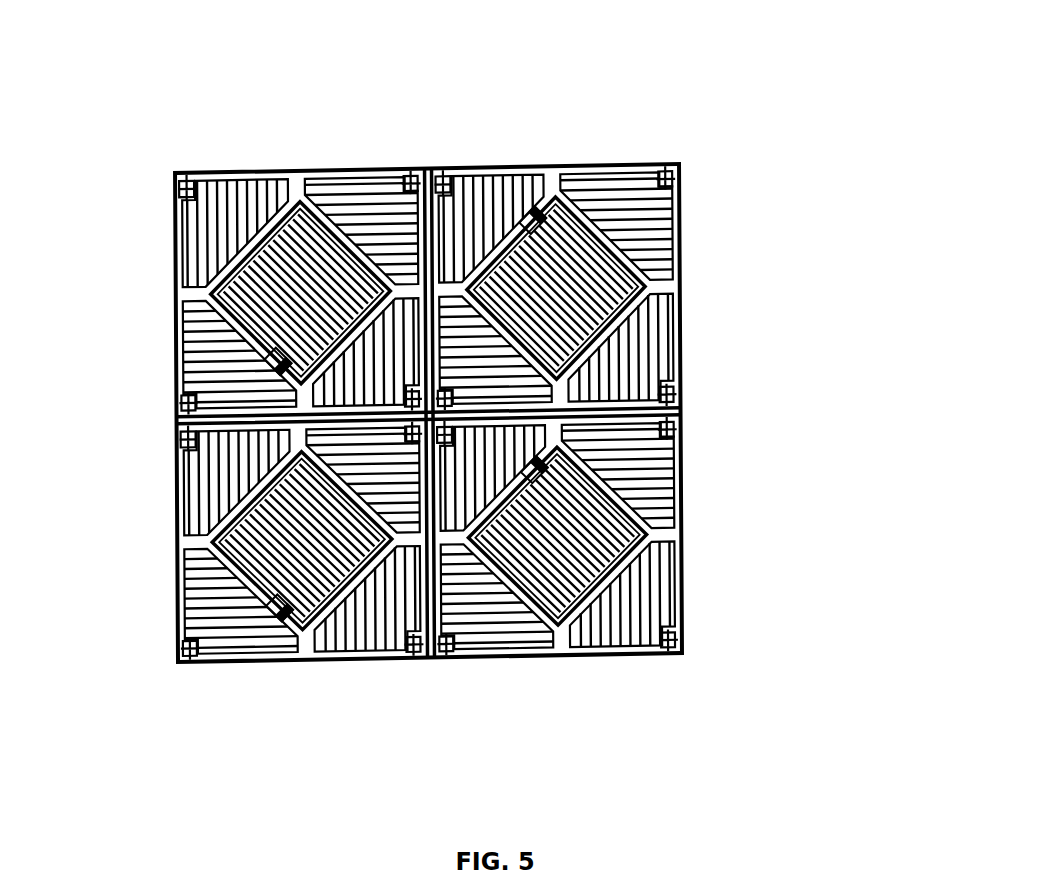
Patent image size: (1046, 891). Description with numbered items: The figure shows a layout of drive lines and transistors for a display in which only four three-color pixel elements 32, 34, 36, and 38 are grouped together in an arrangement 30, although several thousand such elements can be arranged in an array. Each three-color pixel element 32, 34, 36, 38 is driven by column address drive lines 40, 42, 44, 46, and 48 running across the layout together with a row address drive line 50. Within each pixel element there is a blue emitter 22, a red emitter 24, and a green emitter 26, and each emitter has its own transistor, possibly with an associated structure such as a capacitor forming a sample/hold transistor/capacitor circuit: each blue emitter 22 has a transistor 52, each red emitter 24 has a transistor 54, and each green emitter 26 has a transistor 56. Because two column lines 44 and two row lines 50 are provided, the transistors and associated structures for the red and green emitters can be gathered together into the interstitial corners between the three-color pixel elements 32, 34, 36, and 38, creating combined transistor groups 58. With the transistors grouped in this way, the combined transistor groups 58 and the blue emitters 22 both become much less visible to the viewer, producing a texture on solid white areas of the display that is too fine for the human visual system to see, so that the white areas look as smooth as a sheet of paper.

The blue emitter 22 is at (322, 218).
The red emitter 24 is at (233, 200).
The green emitter 26 is at (387, 192).
The arrangement 30 is at (777, 101).
The three-color pixel element 32 is at (247, 257).
The three-color pixel element 34 is at (244, 577).
The three-color pixel element 36 is at (610, 243).
The three-color pixel element 38 is at (611, 573).
The column address drive line 40 is at (185, 180).
The column address drive line 42 is at (304, 196).
The column address drive line 44 is at (429, 178).
The column address drive line 46 is at (552, 205).
The column address drive line 48 is at (657, 133).
The row address drive line 50 is at (687, 411).
The transistor 52 is at (214, 406).
The transistor 54 is at (408, 650).
The transistor 56 is at (455, 648).
The combined transistor group 58 is at (407, 430).